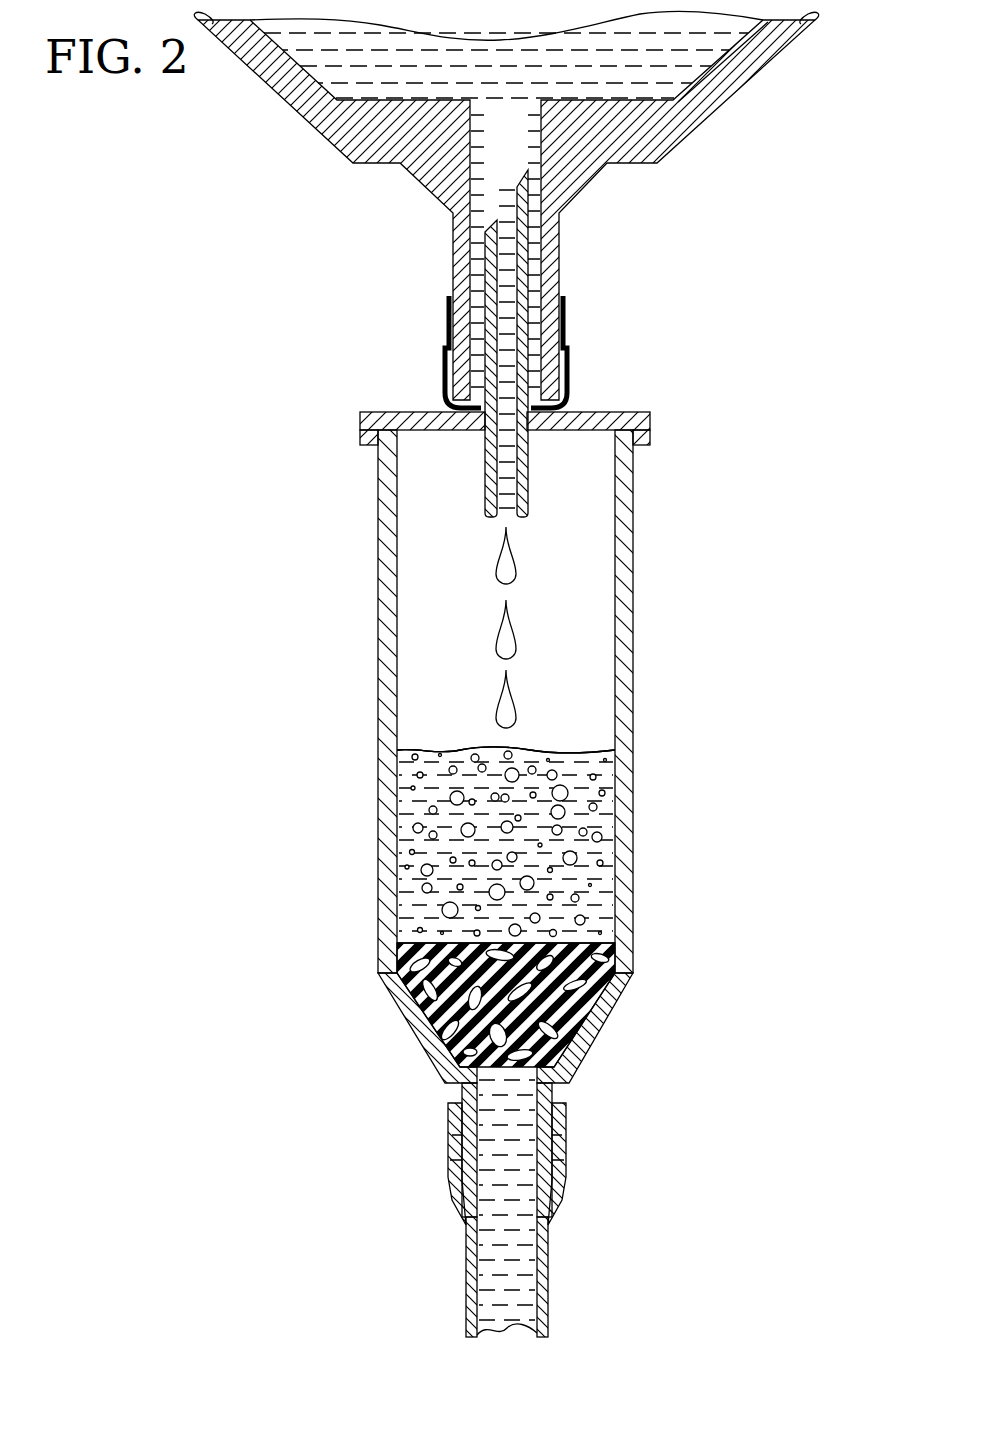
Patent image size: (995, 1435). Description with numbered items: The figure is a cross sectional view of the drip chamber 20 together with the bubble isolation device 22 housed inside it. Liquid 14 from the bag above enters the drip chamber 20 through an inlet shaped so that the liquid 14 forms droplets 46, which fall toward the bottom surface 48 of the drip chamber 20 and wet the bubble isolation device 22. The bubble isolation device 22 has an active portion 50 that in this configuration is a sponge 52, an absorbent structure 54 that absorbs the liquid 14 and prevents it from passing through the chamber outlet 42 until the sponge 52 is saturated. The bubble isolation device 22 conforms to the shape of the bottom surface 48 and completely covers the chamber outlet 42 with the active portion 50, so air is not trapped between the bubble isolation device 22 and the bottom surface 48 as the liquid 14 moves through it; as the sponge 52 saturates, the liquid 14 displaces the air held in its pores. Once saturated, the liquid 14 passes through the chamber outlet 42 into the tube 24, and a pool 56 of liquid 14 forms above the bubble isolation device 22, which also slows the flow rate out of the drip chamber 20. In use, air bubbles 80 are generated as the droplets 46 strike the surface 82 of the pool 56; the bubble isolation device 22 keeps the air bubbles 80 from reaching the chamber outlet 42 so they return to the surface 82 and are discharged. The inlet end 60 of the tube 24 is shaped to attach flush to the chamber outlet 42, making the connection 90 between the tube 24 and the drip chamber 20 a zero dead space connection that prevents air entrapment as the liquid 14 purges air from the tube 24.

The liquid 14 is at (417, 800).
The drip chamber 20 is at (660, 462).
The bubble isolation device 22 is at (624, 1016).
The tube 24 is at (548, 1303).
The chamber outlet 42 is at (527, 1148).
The droplets 46 is at (503, 640).
The bottom surface 48 is at (478, 1073).
The active portion 50 is at (397, 975).
The sponge 52 is at (590, 978).
The absorbent structure 54 is at (423, 1010).
The pool 56 is at (428, 742).
The inlet end 60 is at (555, 1106).
The air bubbles 80 is at (574, 858).
The surface 82 is at (570, 750).
The connection 90 is at (592, 1210).